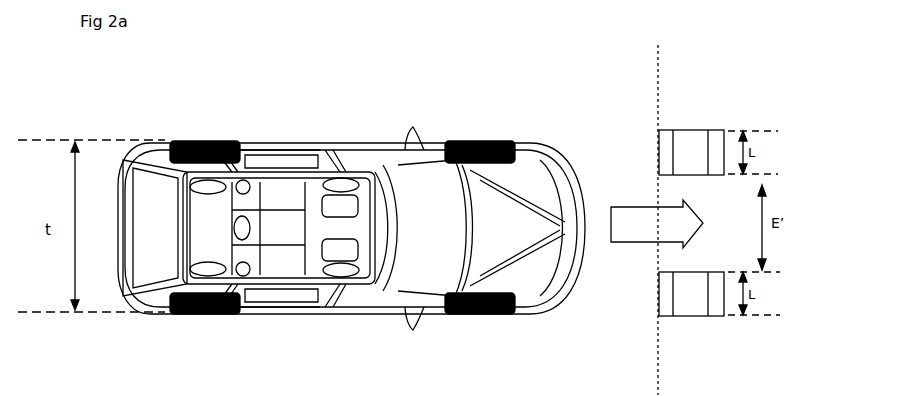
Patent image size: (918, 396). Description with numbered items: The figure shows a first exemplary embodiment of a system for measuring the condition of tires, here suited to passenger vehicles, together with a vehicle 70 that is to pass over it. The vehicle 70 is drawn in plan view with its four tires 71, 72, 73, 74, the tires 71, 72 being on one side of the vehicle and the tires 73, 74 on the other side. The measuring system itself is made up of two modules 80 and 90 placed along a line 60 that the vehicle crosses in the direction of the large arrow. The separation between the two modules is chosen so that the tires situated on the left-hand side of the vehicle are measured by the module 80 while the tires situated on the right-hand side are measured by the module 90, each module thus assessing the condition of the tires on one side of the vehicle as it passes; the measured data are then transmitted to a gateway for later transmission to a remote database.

The vehicle 70 is at (367, 140).
The rear left wheel 71 is at (203, 140).
The front left wheel 72 is at (483, 140).
The rear right wheel 73 is at (218, 316).
The front right wheel 74 is at (480, 316).
The reference line 60 is at (663, 100).
The module 80 is at (685, 155).
The module 90 is at (692, 290).